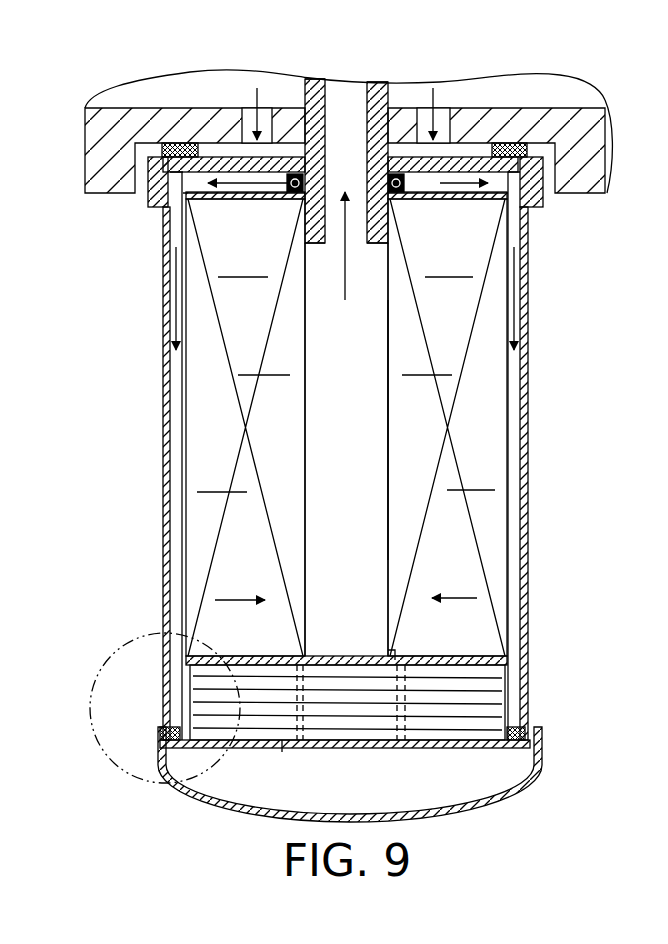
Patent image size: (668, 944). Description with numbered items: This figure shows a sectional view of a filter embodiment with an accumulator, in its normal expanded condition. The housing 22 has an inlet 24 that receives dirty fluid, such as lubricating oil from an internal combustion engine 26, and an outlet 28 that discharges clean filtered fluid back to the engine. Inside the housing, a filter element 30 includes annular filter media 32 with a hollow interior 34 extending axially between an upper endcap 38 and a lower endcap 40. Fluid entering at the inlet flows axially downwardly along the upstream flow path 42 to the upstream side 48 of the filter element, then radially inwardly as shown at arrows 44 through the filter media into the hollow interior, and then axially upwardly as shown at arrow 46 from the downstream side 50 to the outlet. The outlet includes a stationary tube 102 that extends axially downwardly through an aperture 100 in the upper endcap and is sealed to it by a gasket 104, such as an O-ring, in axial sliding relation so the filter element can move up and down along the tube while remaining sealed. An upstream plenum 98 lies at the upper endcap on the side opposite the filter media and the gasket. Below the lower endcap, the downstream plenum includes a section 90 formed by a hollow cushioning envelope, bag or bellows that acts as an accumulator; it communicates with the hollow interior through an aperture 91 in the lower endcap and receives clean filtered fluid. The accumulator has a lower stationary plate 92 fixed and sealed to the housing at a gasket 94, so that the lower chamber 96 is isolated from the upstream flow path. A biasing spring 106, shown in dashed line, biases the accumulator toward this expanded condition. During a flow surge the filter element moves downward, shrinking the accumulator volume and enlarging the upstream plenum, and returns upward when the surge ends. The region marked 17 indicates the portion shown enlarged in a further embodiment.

The enlarged portion 17 is at (140, 637).
The housing 22 is at (163, 322).
The inlet 24 is at (244, 108).
The internal combustion engine 26 is at (553, 92).
The outlet 28 is at (348, 88).
The filter element 30 is at (183, 387).
The annular filter media 32 is at (190, 522).
The hollow interior 34 is at (310, 432).
The upper endcap 38 is at (222, 200).
The lower endcap 40 is at (248, 656).
The upstream flow path 42 is at (176, 287).
The radially inward flow 44 is at (462, 278).
The downstream flow path 46 is at (343, 280).
The upstream side 48 is at (512, 408).
The downstream side 50 is at (385, 428).
The downstream plenum section 90 is at (350, 680).
The aperture 91 is at (392, 656).
The lower stationary plate 92 is at (388, 746).
The gasket 94 is at (160, 746).
The lower chamber 96 is at (512, 773).
The upstream plenum 98 is at (497, 185).
The aperture 100 is at (396, 194).
The stationary tube 102 is at (302, 82).
The gasket 104 is at (272, 200).
The biasing spring 106 is at (282, 752).